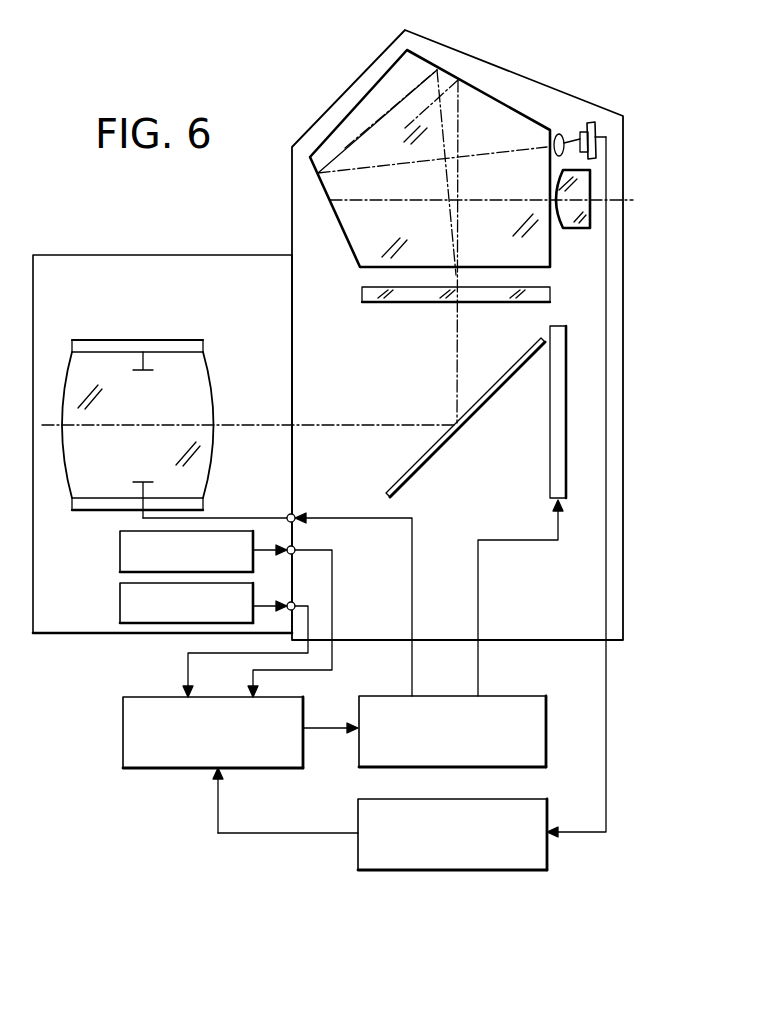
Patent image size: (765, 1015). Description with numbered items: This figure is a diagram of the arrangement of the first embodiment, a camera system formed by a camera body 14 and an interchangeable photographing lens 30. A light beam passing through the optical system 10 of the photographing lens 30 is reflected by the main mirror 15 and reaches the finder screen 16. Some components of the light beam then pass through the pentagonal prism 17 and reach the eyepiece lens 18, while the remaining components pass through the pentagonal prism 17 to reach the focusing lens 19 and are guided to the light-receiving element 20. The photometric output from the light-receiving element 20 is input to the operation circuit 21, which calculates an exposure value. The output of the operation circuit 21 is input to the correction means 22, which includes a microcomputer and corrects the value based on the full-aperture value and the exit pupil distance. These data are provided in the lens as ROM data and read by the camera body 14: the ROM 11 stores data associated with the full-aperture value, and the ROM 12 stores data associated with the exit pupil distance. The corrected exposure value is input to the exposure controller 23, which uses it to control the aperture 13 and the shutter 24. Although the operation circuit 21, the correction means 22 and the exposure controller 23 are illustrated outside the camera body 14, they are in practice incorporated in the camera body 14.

The optical system 10 is at (92, 358).
The ROM 11 is at (120, 552).
The ROM 12 is at (120, 607).
The aperture 13 is at (182, 340).
The camera body 14 is at (613, 498).
The main mirror 15 is at (493, 395).
The finder screen 16 is at (395, 303).
The pentagonal prism 17 is at (497, 113).
The eyepiece lens 18 is at (577, 228).
The focusing lens 19 is at (559, 133).
The light-receiving element 20 is at (588, 123).
The operation circuit 21 is at (547, 820).
The correction means 22 is at (153, 697).
The exposure controller 23 is at (510, 695).
The shutter 24 is at (553, 467).
The photographing lens 30 is at (188, 253).